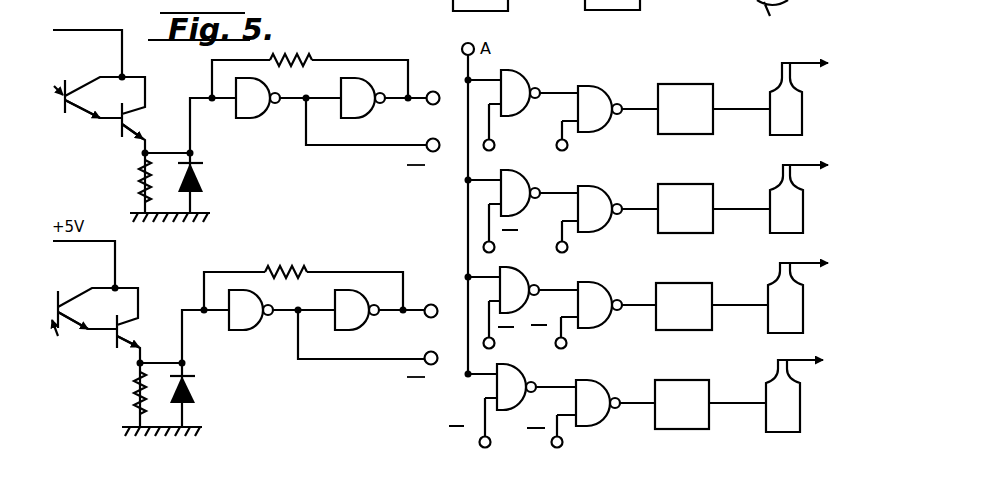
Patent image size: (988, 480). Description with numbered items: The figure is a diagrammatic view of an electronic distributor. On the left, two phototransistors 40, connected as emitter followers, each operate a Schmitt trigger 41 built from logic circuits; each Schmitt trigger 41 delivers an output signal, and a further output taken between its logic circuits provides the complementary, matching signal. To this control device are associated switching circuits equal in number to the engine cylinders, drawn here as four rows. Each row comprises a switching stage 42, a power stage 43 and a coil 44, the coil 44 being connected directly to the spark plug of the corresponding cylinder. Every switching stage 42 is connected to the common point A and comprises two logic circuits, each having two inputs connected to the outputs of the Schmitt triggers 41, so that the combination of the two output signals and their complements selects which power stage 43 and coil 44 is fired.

The phototransistor 40 is at (54, 85).
The Schmitt trigger 41 is at (329, 78).
The switching stage 42 is at (567, 89).
The power stage 43 is at (704, 413).
The coil 44 is at (784, 104).